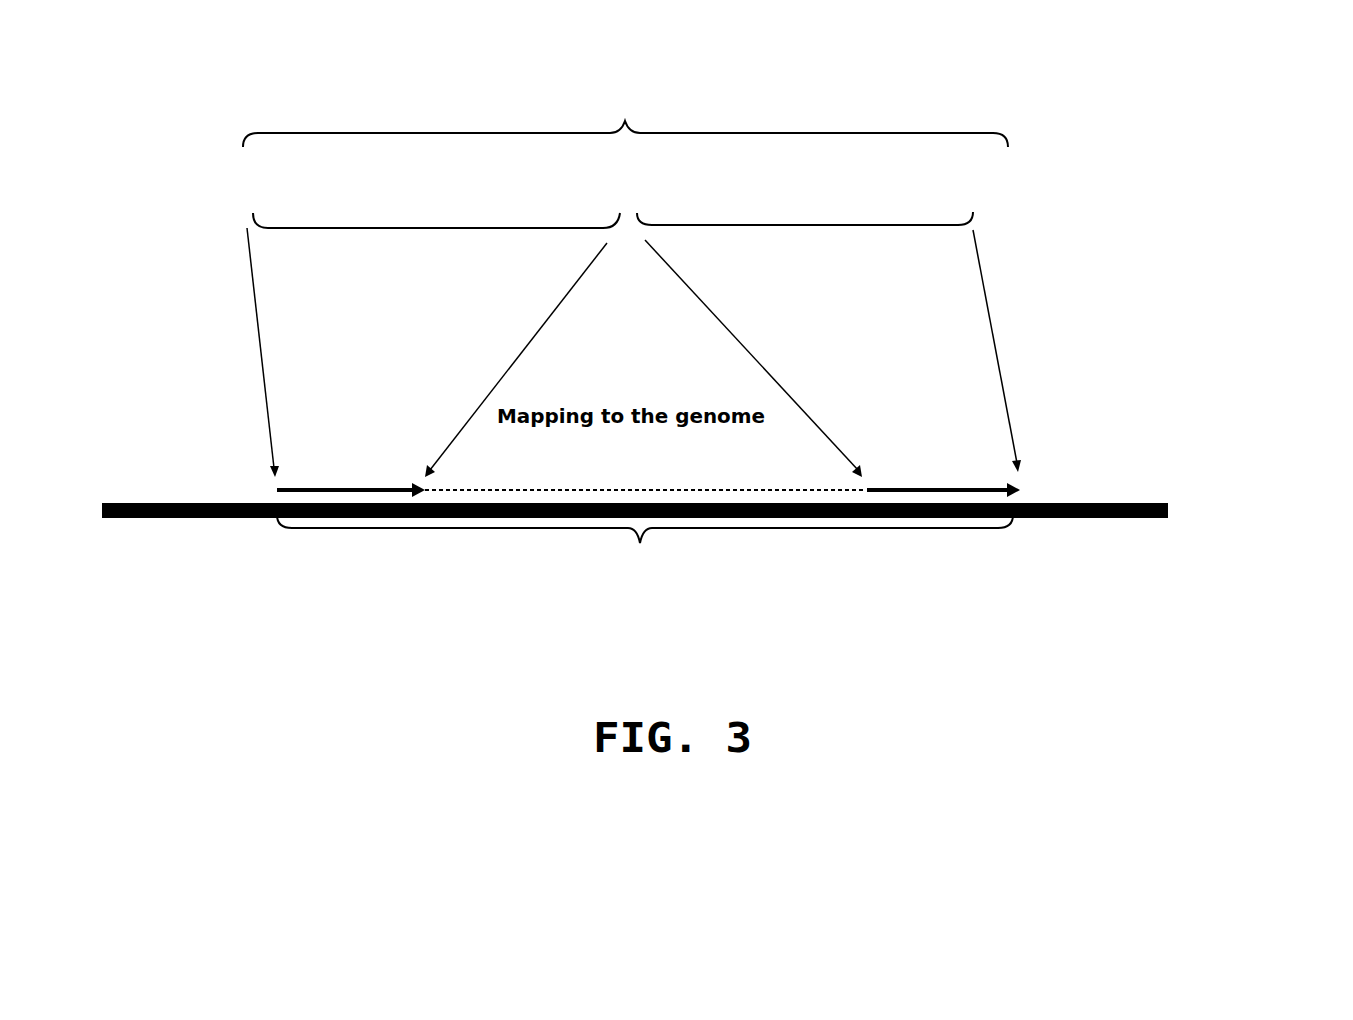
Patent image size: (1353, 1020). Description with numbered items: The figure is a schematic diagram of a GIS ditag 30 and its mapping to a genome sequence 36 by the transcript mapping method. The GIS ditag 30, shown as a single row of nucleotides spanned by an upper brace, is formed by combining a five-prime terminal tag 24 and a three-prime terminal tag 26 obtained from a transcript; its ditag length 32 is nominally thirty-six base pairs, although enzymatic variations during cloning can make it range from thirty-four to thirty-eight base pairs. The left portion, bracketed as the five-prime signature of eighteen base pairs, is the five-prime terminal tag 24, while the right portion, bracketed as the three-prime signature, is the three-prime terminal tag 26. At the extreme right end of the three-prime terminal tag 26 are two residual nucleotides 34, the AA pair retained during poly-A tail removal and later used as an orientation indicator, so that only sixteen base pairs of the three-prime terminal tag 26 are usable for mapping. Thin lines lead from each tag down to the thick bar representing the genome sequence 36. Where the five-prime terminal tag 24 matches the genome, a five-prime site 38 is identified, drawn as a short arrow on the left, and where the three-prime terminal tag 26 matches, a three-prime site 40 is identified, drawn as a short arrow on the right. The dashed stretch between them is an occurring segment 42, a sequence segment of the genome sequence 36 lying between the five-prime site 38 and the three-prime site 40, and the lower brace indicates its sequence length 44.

The 5' terminal tag 24 is at (327, 235).
The 3' terminal tag 26 is at (922, 227).
The GIS ditag 30 is at (622, 121).
The ditag length 32 is at (806, 147).
The residual nucleotides 34 is at (1004, 222).
The genome sequence 36 is at (1160, 538).
The 5' site 38 is at (338, 488).
The 3' site 40 is at (937, 483).
The occurring segment 42 is at (676, 473).
The sequence length 44 is at (640, 543).